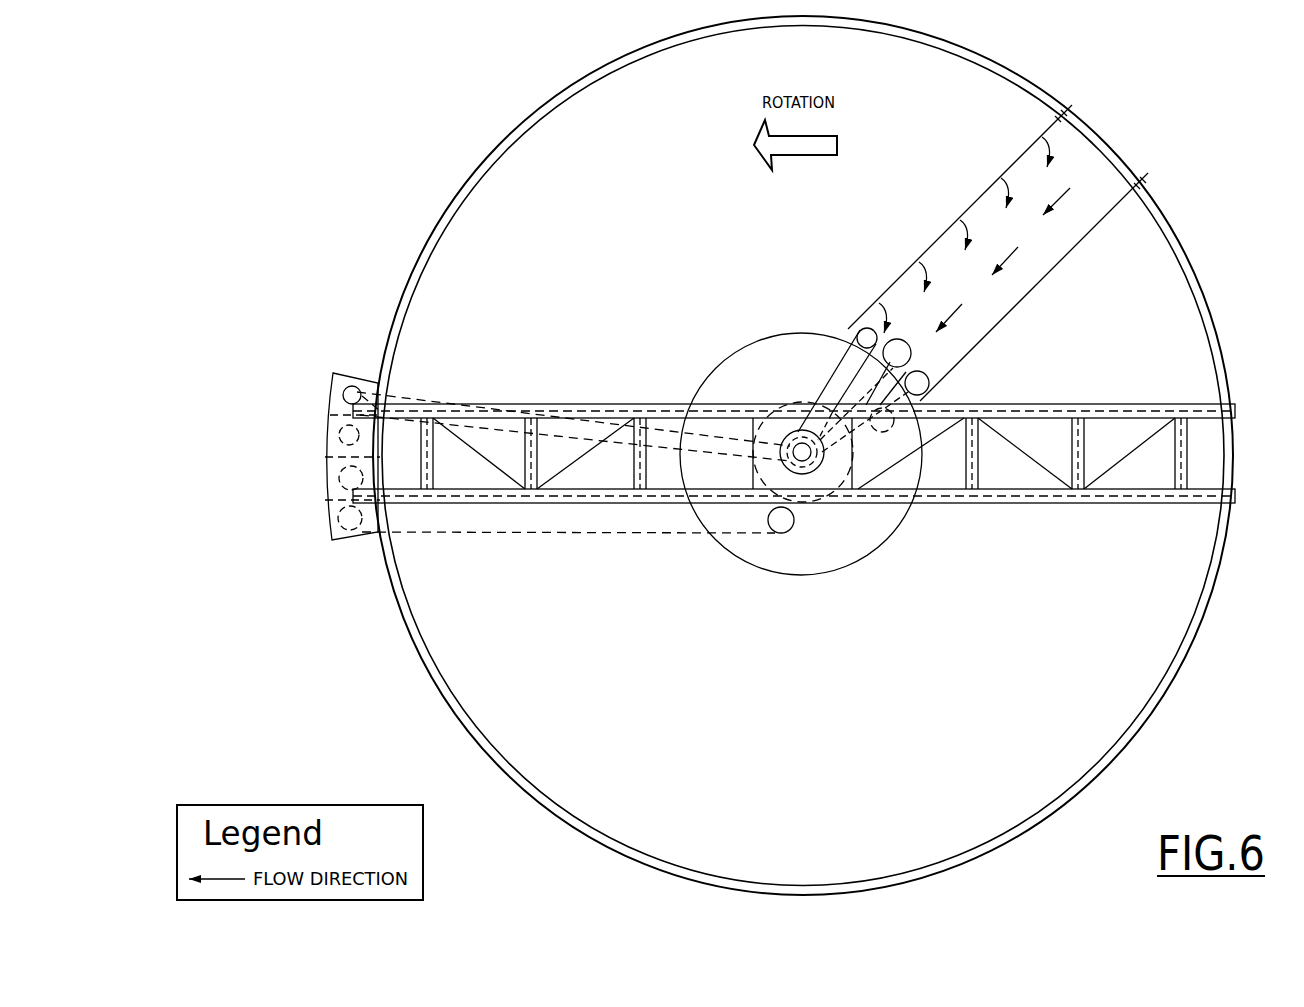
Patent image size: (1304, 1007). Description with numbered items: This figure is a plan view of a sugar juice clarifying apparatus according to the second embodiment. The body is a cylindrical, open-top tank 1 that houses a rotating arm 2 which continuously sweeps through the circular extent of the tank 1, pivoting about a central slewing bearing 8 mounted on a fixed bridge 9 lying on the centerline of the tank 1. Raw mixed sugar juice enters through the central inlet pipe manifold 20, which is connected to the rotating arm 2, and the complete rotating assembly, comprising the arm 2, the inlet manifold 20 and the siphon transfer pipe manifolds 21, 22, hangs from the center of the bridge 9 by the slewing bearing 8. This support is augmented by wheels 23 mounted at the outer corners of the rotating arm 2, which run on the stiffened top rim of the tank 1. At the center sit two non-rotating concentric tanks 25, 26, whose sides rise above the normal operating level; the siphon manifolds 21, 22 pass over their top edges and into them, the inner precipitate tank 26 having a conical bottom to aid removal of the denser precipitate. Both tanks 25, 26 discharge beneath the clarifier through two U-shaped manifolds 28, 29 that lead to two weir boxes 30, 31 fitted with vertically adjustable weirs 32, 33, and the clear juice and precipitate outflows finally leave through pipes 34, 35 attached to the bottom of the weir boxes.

The tank 1 is at (1160, 194).
The rotating arm 2 is at (1066, 263).
The slewing bearing 8 is at (816, 484).
The fixed bridge 9 is at (1076, 402).
The raw mixed sugar juice inlet pipe manifold 20 is at (922, 353).
The siphon transfer pipe manifold 21 is at (942, 384).
The siphon transfer pipe manifold 22 is at (852, 330).
The wheels 23 is at (1073, 101).
The outer concentric tank 25 is at (700, 387).
The inner precipitate tank 26 is at (843, 493).
The 'U' shaped manifold 28 is at (459, 536).
The 'U' shaped manifold 29 is at (426, 396).
The weir box 30 is at (353, 548).
The weir box 31 is at (355, 377).
The vertically adjustable weir 32 is at (329, 505).
The vertically adjustable weir 33 is at (325, 410).
The outlet pipe 34 is at (331, 485).
The outlet pipe 35 is at (333, 438).